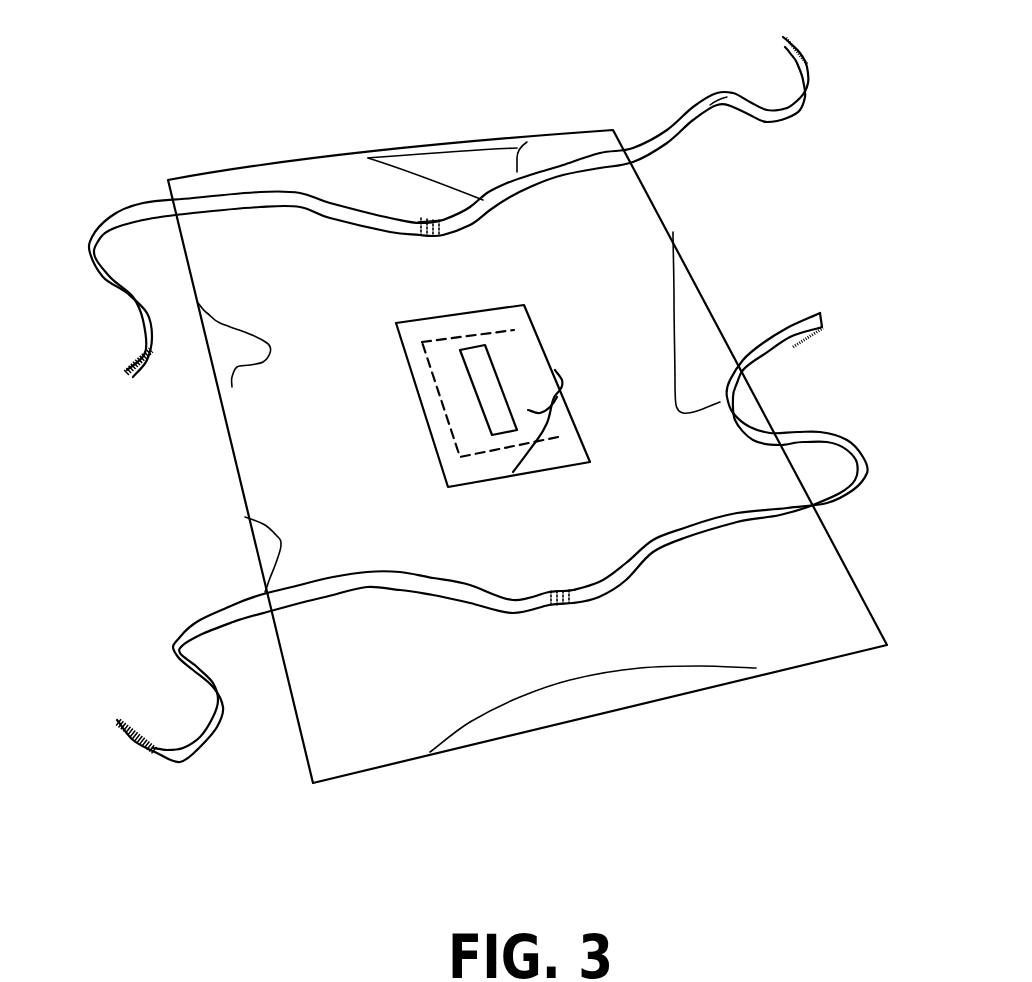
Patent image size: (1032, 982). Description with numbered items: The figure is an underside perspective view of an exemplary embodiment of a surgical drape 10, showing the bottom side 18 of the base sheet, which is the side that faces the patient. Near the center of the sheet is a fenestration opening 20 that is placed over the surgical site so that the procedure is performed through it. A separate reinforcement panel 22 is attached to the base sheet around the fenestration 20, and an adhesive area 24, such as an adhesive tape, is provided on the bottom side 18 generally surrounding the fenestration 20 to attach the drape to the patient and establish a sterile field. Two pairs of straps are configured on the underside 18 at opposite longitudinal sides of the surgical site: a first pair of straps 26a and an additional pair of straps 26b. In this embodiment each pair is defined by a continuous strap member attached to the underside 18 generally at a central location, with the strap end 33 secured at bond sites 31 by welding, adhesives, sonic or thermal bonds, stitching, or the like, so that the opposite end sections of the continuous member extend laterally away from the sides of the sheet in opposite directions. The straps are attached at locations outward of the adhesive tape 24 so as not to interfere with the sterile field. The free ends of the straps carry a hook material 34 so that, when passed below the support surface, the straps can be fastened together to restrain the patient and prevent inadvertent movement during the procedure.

The surgical drape 10 is at (403, 80).
The bottom side 18 is at (272, 503).
The fenestration opening 20 is at (490, 382).
The reinforcement panel 22 is at (562, 450).
The adhesive area 24 is at (545, 388).
The straps 26a is at (145, 210).
The additional pair of straps 26b is at (773, 347).
The bond sites 31 is at (428, 236).
The end 33 is at (417, 222).
The hook material 34 is at (797, 42).